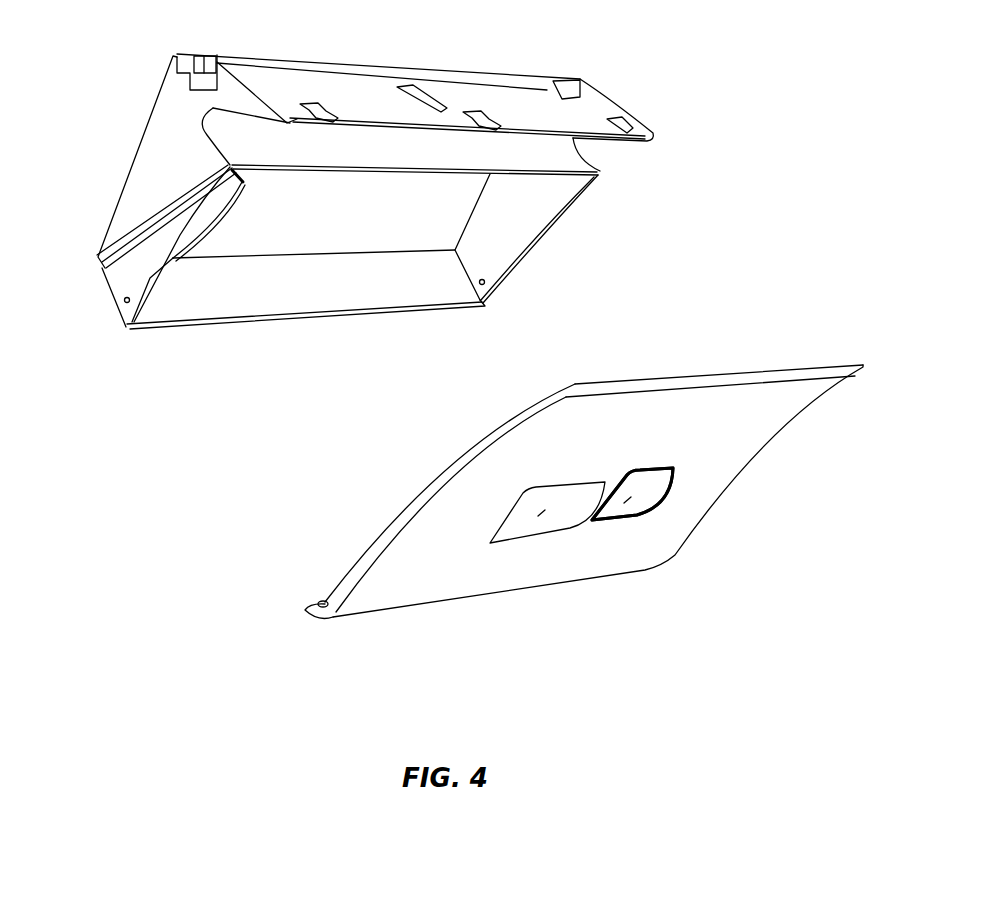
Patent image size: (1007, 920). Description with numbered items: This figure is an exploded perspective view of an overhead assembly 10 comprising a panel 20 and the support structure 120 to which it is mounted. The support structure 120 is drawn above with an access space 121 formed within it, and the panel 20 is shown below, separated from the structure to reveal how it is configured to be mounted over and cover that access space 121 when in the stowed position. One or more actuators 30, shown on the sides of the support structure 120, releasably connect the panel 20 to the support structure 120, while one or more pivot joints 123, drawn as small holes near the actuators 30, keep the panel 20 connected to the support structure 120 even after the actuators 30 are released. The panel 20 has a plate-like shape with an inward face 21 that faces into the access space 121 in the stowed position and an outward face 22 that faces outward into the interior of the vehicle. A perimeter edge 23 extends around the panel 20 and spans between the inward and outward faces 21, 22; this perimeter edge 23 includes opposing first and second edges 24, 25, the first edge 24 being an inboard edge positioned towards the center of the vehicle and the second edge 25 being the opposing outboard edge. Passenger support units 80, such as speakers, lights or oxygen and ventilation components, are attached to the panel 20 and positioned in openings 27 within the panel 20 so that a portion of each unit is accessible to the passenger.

The handle assembly 10 is at (385, 183).
The panel 20 is at (545, 496).
The inward face 21 is at (470, 450).
The outward face 22 is at (457, 592).
The perimeter edge 23 is at (403, 516).
The first edge 24 is at (717, 370).
The second edge 25 is at (302, 606).
The openings 27 is at (673, 468).
The actuators 30 is at (130, 293).
The passenger support units 80 is at (627, 500).
The support structure 120 is at (168, 136).
The access space 121 is at (386, 190).
The pivot joints 123 is at (123, 300).